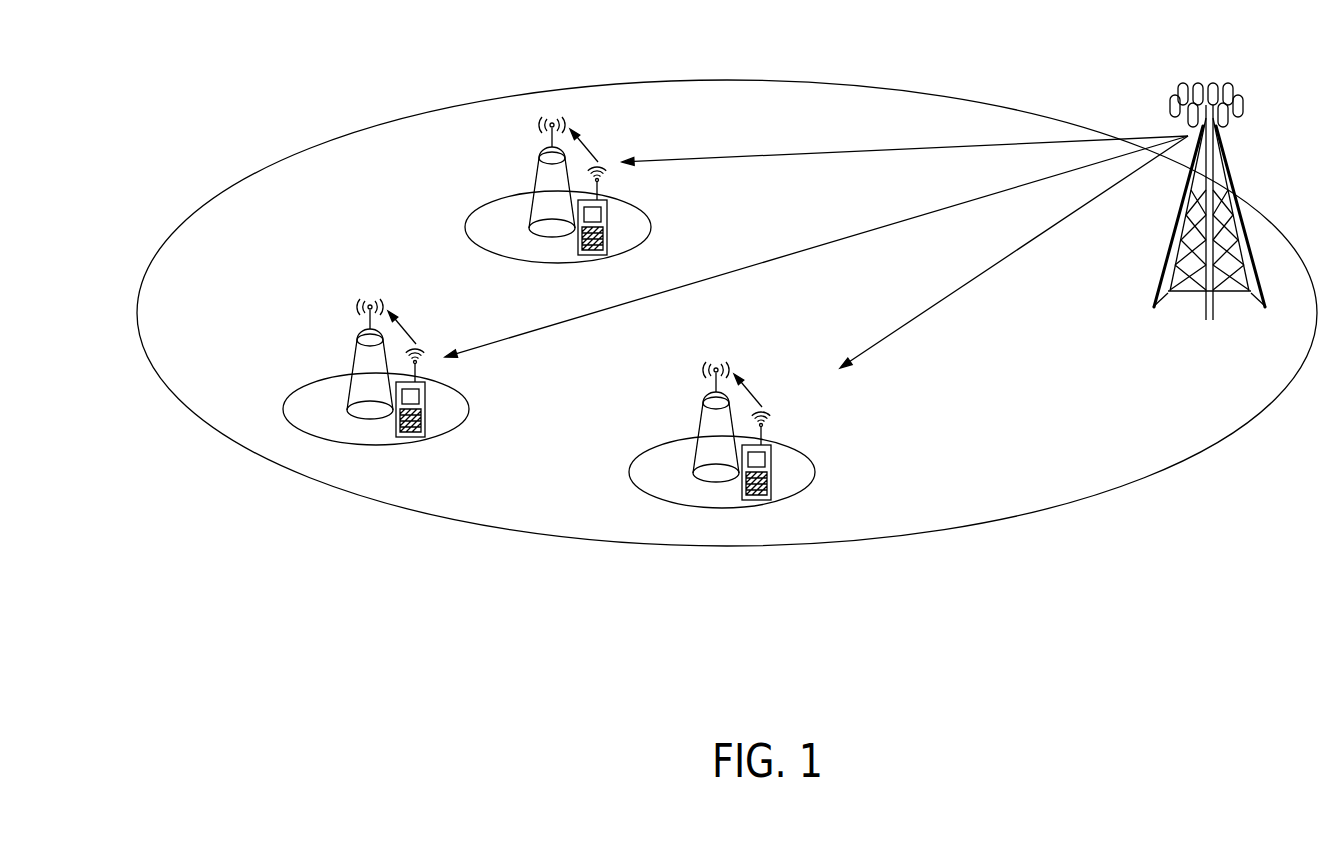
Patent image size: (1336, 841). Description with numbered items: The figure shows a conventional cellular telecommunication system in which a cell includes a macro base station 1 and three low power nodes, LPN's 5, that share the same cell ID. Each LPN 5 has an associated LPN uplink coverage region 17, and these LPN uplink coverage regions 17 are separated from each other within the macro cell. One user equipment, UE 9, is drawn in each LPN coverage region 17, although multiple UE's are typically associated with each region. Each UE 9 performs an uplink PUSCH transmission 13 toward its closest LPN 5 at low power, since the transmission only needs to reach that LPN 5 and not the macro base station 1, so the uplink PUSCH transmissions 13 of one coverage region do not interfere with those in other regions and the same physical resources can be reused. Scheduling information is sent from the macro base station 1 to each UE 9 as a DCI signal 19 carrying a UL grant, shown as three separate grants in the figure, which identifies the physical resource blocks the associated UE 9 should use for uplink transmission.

The macro base station 1 is at (1222, 148).
The LPN 5 is at (548, 178).
The UE 9 is at (607, 238).
The uplink PUSCH transmission 13 is at (583, 144).
The LPN uplink coverage region 17 is at (650, 220).
The DCI signal 19 is at (950, 147).